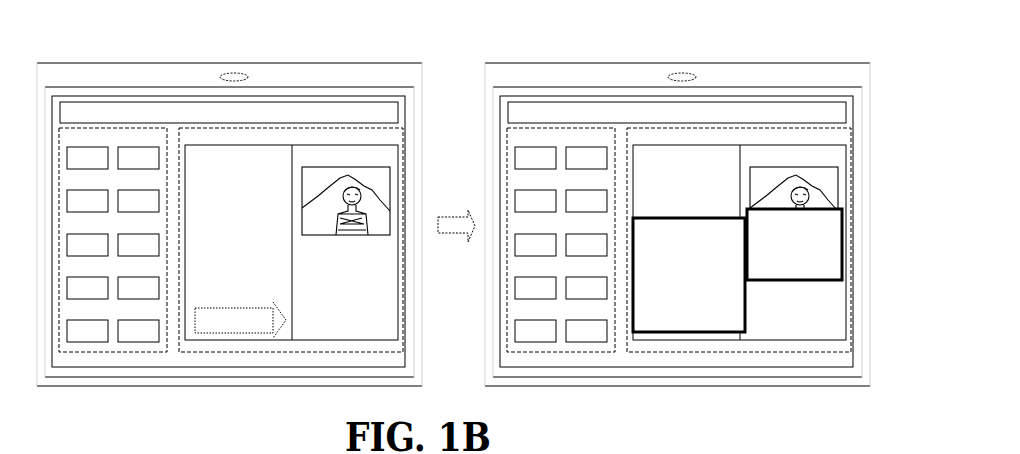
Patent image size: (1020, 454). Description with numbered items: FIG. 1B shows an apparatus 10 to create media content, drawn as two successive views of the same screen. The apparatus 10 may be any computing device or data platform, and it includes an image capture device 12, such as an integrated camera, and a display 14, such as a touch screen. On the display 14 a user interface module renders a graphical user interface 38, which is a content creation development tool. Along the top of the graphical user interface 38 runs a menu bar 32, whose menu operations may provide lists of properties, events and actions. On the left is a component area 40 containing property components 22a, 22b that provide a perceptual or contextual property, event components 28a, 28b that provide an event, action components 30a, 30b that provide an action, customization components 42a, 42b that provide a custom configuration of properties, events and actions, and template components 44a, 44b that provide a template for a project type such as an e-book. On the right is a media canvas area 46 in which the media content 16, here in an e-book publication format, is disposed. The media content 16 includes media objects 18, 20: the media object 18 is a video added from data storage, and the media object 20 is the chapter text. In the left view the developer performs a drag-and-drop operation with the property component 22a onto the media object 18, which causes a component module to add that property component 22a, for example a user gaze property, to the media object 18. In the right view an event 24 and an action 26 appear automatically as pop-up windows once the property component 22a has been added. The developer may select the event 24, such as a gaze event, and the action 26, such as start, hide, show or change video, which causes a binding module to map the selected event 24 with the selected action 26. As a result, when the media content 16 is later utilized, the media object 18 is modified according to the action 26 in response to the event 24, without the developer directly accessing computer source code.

The apparatus 10 is at (54, 37).
The image capture device 12 is at (226, 75).
The display 14 is at (290, 86).
The media content 16 is at (396, 221).
The media object 18 is at (392, 185).
The media object 20 is at (279, 222).
The property component 22a is at (320, 184).
The property component 22b is at (362, 158).
The event 24 is at (770, 281).
The action 26 is at (704, 333).
The event component 28a is at (311, 201).
The event component 28b is at (362, 201).
The action component 30a is at (311, 245).
The action component 30b is at (362, 245).
The menu bar 32 is at (453, 112).
The graphical user interface 38 is at (102, 366).
The component area 40 is at (160, 352).
The customization component 42a is at (311, 288).
The customization component 42b is at (362, 288).
The template component 44a is at (311, 331).
The template component 44b is at (362, 331).
The media canvas area 46 is at (212, 352).